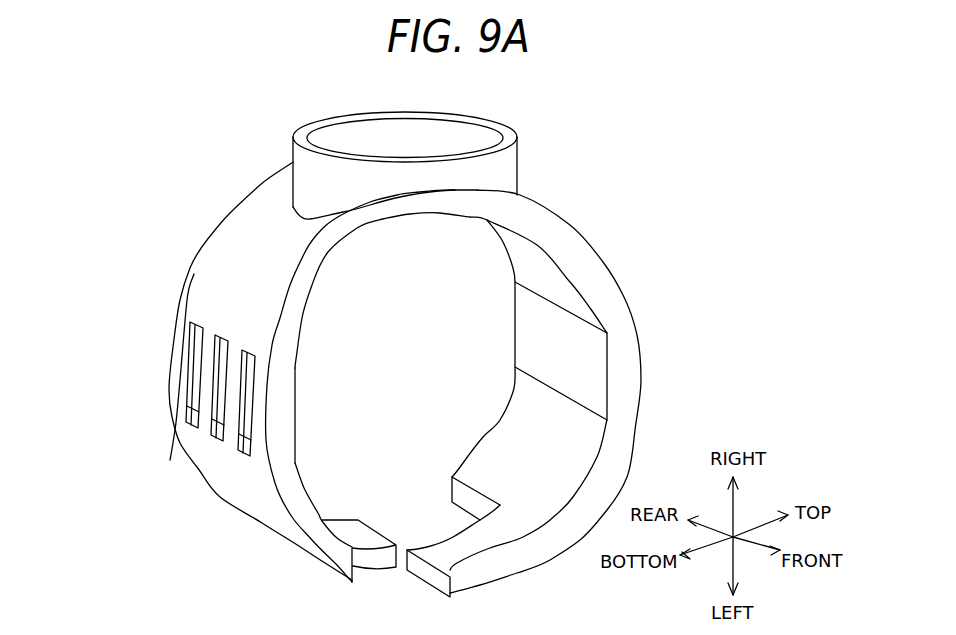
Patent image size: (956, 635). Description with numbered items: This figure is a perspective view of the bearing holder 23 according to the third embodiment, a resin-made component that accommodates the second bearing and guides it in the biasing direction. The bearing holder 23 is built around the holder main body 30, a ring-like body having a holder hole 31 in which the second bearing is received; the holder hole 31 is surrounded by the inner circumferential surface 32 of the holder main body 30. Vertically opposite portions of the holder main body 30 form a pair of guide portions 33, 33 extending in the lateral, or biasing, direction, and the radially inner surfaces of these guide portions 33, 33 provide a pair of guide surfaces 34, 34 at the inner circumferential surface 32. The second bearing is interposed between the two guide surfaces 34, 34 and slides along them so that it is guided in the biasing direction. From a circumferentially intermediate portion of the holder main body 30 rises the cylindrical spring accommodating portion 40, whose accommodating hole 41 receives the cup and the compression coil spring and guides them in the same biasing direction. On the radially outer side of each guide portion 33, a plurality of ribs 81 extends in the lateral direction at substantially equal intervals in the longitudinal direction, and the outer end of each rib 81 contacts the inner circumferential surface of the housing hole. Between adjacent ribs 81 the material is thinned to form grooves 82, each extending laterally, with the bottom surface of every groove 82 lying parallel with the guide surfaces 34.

The bearing holder 23 is at (164, 211).
The holder main body 30 is at (212, 489).
The holder hole 31 is at (449, 404).
The inner circumferential surface 32 is at (542, 462).
The guide portion 33 is at (163, 317).
The guide surface 34 is at (297, 417).
The spring accommodating portion 40 is at (307, 182).
The accommodating hole 41 is at (393, 142).
The rib 81 is at (257, 427).
The groove 82 is at (256, 368).